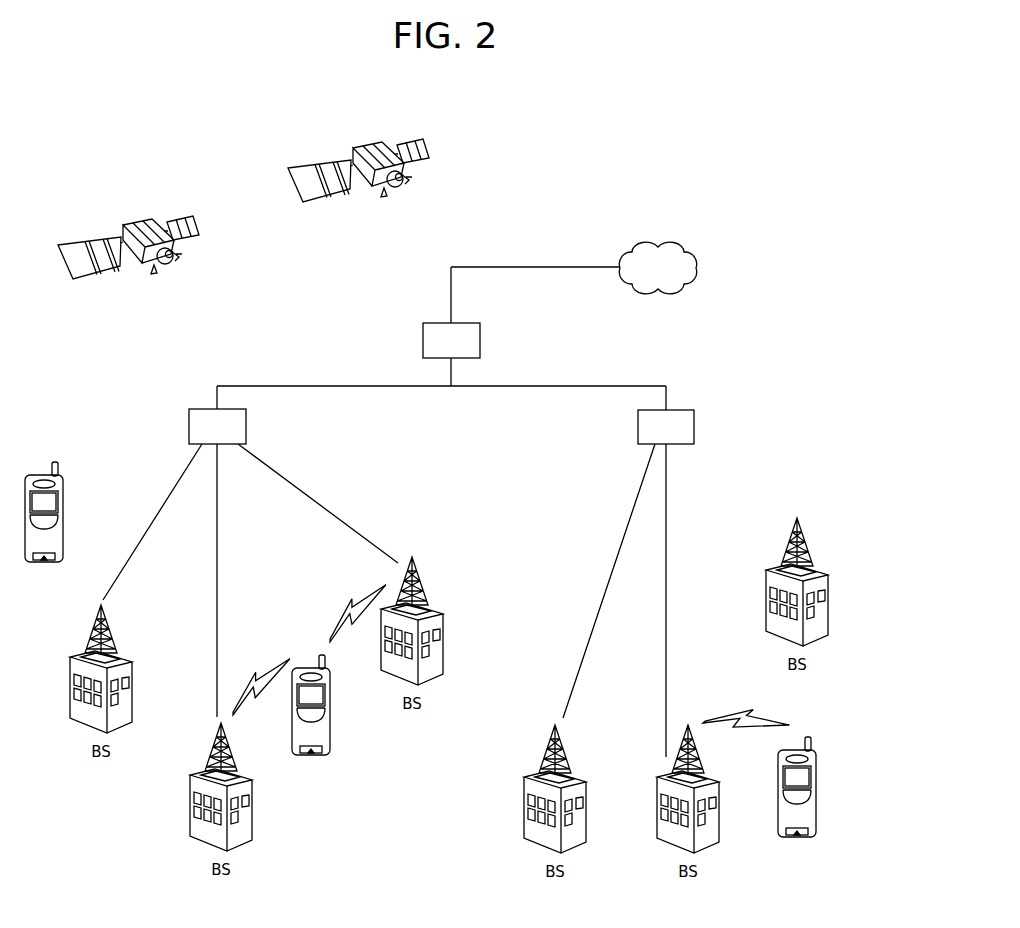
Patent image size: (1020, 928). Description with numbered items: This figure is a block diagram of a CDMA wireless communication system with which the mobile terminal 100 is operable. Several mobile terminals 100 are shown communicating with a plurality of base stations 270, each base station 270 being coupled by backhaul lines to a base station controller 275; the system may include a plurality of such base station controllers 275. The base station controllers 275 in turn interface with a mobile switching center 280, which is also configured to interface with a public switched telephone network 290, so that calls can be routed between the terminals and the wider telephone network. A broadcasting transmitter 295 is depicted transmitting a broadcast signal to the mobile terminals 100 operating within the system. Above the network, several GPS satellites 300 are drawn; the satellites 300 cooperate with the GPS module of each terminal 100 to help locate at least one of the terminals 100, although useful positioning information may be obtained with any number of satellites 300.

The mobile terminal 100 is at (826, 882).
The base station 270 is at (748, 878).
The base station controller 275 is at (728, 423).
The mobile switching center 280 is at (480, 340).
The public switched telephone network 290 is at (697, 268).
The broadcasting transmitter 295 is at (765, 600).
The GPS satellite 300 is at (370, 112).